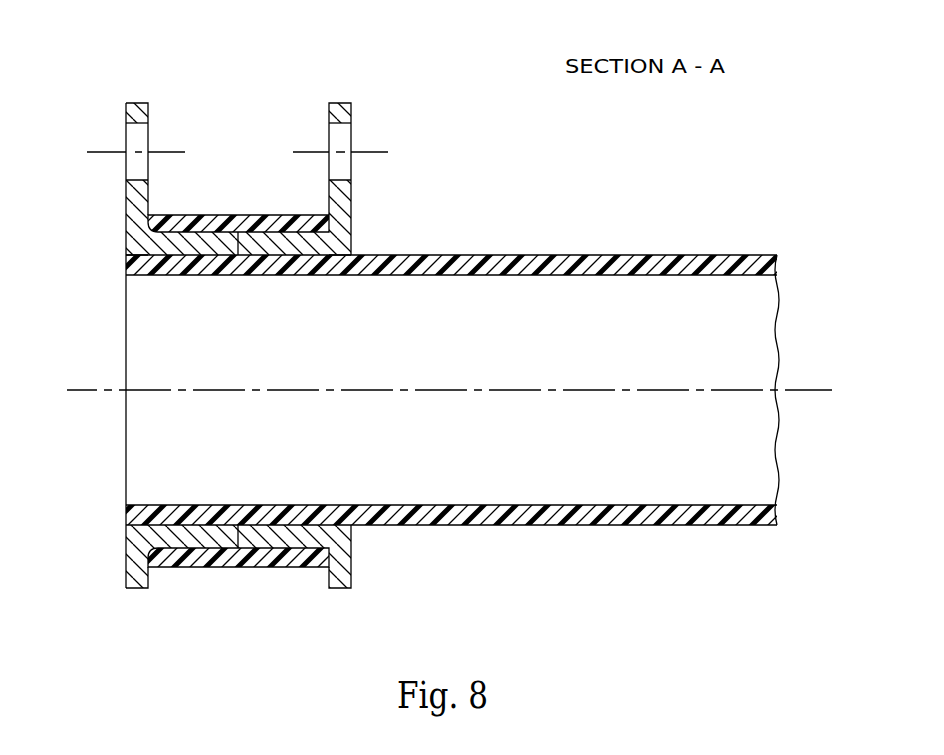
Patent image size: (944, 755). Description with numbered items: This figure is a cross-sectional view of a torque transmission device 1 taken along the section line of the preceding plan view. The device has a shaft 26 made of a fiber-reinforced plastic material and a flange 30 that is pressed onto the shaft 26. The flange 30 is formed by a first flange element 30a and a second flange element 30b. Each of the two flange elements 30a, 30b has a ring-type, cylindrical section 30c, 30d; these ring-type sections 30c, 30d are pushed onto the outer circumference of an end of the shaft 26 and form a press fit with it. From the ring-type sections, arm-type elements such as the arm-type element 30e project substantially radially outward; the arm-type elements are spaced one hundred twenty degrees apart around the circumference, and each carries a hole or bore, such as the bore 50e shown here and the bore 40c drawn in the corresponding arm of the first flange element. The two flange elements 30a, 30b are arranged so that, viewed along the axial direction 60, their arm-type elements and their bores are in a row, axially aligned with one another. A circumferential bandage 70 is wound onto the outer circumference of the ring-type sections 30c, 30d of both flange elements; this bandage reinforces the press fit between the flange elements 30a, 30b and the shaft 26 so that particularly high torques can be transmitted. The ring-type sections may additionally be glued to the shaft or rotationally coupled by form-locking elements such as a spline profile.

The torque transmission device 1 is at (622, 135).
The shaft 26 is at (563, 254).
The flange 30 is at (280, 109).
The first flange element 30a is at (136, 93).
The second flange element 30b is at (342, 93).
The ring-type section 30c is at (190, 249).
The ring-type section 30d is at (285, 247).
The arm-type element 30e is at (125, 114).
The flange wall 40c is at (126, 127).
The bore 50e is at (343, 137).
The axial direction 60 is at (802, 390).
The circumferential bandage 70 is at (257, 220).